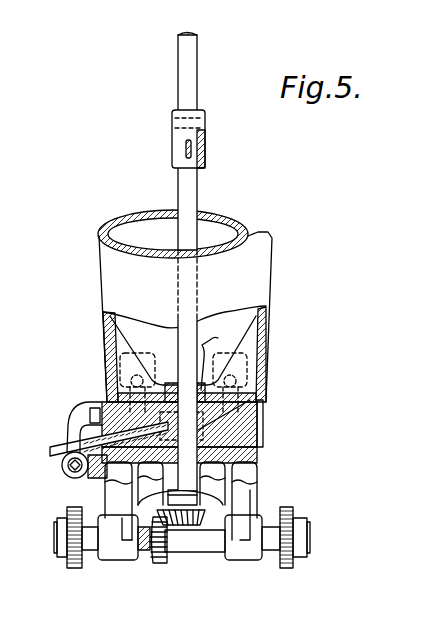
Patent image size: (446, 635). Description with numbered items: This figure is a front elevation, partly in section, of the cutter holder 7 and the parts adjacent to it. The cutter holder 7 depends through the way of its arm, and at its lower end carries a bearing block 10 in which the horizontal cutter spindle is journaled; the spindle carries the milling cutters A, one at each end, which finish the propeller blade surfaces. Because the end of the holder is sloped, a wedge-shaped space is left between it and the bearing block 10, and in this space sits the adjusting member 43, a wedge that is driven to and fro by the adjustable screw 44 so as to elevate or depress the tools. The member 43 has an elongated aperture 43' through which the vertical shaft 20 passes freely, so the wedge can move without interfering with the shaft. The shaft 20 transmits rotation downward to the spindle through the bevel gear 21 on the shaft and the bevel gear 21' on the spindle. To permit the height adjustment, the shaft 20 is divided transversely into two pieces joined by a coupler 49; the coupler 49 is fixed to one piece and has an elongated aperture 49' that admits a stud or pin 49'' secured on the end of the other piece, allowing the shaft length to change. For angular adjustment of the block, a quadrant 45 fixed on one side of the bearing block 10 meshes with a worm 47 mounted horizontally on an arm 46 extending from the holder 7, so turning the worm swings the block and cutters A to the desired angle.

The cutter holder 7 is at (258, 276).
The bearing block 10 is at (250, 492).
The shaft 20 is at (192, 81).
The bevel gear 21 is at (202, 553).
The bevel gear 21' is at (162, 557).
The adjusting member 43 is at (203, 423).
The aperture 43' is at (285, 415).
The adjustable screw 44 is at (50, 449).
The quadrant 45 is at (100, 468).
The arm 46 is at (80, 417).
The worm 47 is at (68, 470).
The coupler 49 is at (166, 139).
The elongated aperture 49' is at (200, 140).
The stud or pin 49'' is at (157, 168).
The cutter A is at (73, 568).